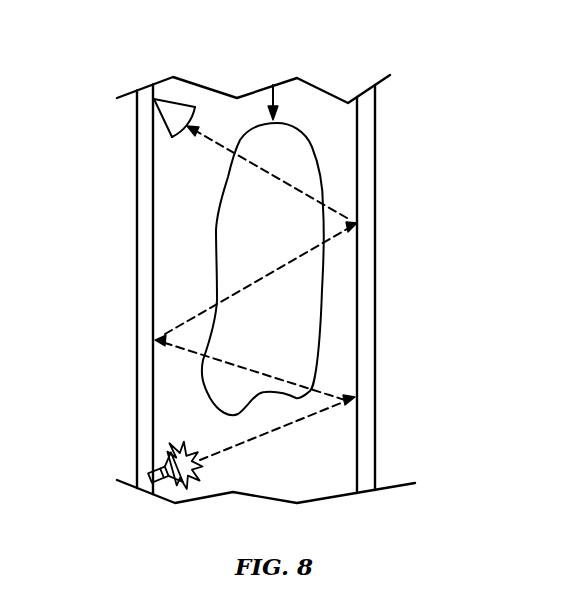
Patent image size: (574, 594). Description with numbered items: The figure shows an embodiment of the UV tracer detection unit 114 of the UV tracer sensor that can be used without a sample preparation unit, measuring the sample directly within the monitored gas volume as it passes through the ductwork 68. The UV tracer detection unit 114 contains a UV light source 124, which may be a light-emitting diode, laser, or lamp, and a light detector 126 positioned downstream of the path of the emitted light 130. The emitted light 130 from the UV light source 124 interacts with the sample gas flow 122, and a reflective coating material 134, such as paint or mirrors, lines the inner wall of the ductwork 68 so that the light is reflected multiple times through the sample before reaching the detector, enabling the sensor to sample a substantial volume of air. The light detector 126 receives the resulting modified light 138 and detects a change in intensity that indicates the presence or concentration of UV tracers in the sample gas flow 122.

The UV tracer detection unit 114 is at (433, 59).
The ductwork 68 is at (375, 292).
The sample gas flow 122 is at (275, 102).
The UV light source 124 is at (163, 472).
The light detector 126 is at (178, 100).
The emitted light 130 is at (267, 432).
The reflective coating material 134 is at (366, 238).
The modified light 138 is at (218, 145).